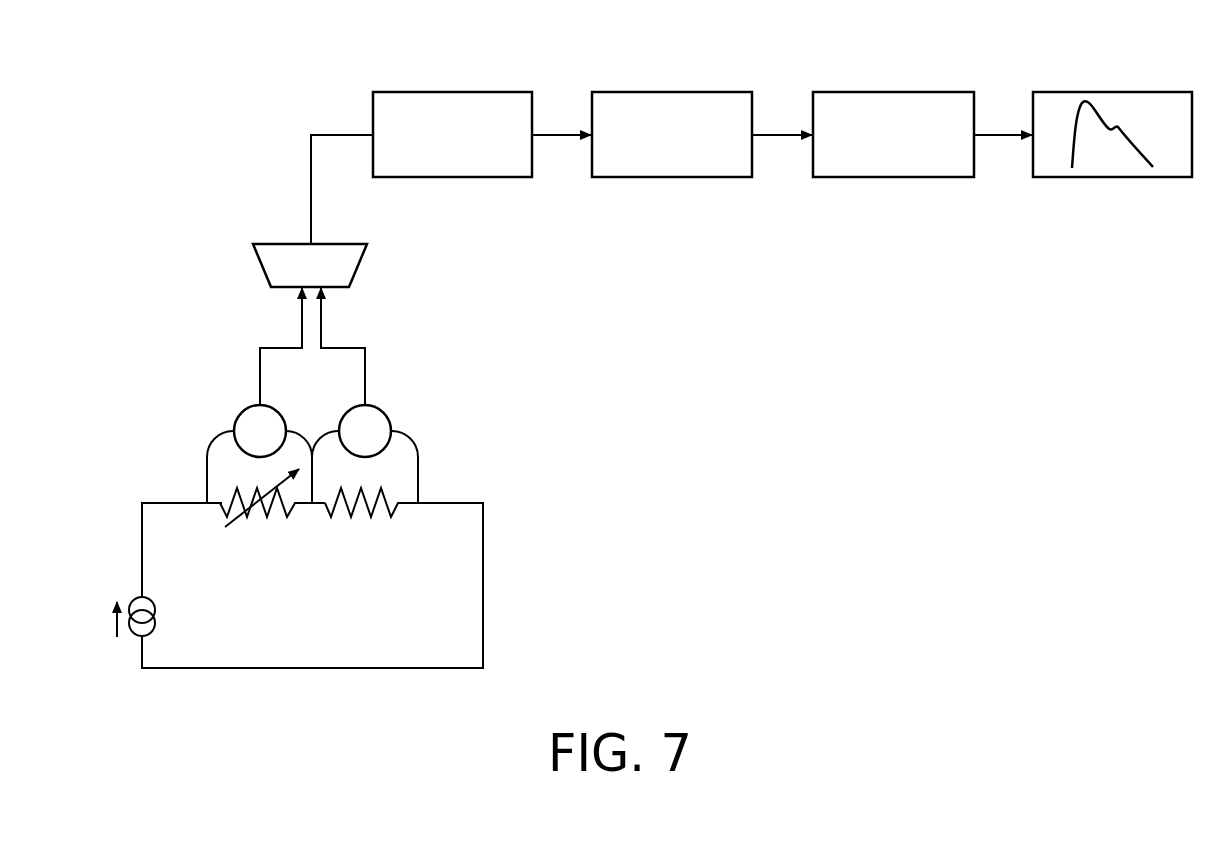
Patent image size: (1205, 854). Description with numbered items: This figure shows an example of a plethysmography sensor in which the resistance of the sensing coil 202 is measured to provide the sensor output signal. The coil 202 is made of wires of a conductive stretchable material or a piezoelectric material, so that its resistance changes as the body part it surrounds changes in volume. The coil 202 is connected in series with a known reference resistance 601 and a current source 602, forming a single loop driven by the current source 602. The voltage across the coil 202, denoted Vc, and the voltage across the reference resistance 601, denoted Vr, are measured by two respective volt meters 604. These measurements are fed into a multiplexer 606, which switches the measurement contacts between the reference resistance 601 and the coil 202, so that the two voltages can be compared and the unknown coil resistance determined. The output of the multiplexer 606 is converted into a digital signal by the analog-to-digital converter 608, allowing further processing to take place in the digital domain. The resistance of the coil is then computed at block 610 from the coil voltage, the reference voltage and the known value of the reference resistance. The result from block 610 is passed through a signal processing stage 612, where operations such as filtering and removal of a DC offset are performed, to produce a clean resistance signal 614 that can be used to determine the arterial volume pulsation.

The coil 202 is at (221, 492).
The reference resistance 601 is at (401, 492).
The current source 602 is at (130, 637).
The volt meters 604 is at (236, 413).
The multiplexer 606 is at (363, 267).
The analog-to-digital converter 608 is at (453, 92).
The block 610 is at (675, 92).
The signal processing unit 612 is at (895, 92).
The clean resistance signal 614 is at (1115, 92).